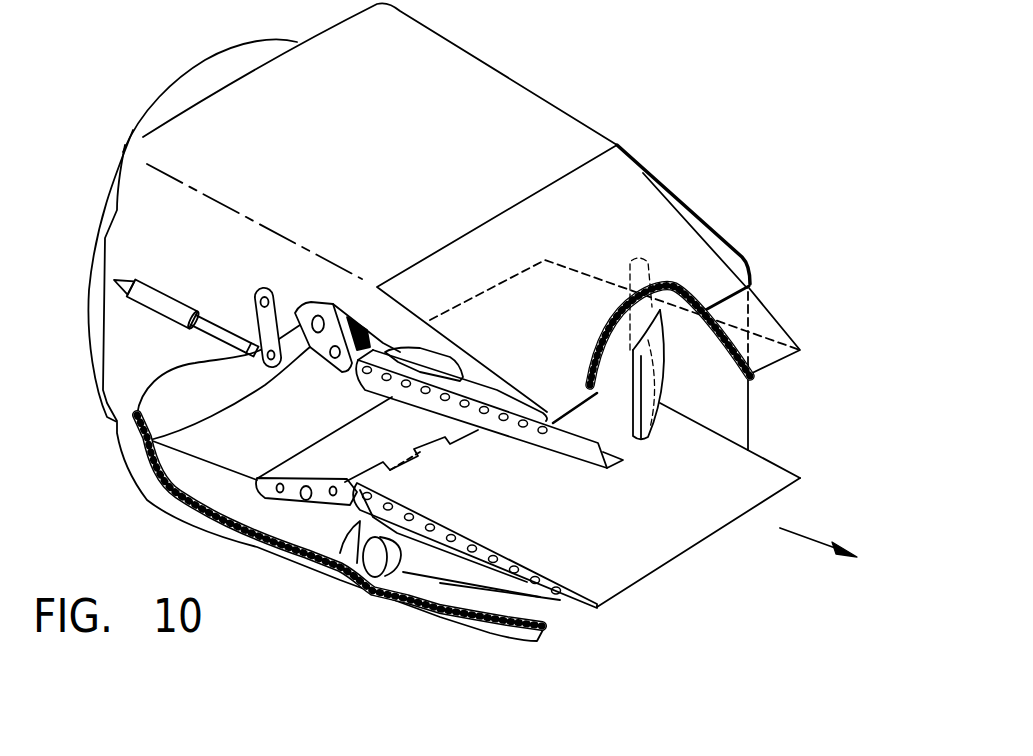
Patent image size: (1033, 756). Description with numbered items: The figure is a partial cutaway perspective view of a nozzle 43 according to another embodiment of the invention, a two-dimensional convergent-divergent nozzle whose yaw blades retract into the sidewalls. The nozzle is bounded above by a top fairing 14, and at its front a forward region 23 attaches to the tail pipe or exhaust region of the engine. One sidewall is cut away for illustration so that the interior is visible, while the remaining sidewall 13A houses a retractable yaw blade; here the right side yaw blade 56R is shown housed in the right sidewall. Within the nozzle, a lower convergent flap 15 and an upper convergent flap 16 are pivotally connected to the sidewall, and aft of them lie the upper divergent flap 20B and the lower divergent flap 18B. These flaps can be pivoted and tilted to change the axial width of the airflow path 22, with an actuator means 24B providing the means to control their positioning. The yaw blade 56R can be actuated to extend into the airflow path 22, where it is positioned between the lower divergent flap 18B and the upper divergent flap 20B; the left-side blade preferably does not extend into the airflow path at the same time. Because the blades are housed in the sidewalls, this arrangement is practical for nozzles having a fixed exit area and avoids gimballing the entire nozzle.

The top fairing 14 is at (346, 107).
The forward region 23 is at (197, 80).
The nozzle 43 is at (603, 112).
The sidewall 13A is at (745, 427).
The lower divergent flap 18B is at (613, 583).
The airflow path 22 is at (800, 538).
The right side yaw blade 56R is at (661, 398).
The upper divergent flap 20B is at (560, 442).
The upper convergent flap 16 is at (340, 372).
The lower convergent flap 15 is at (327, 457).
The actuator means 24B is at (160, 283).